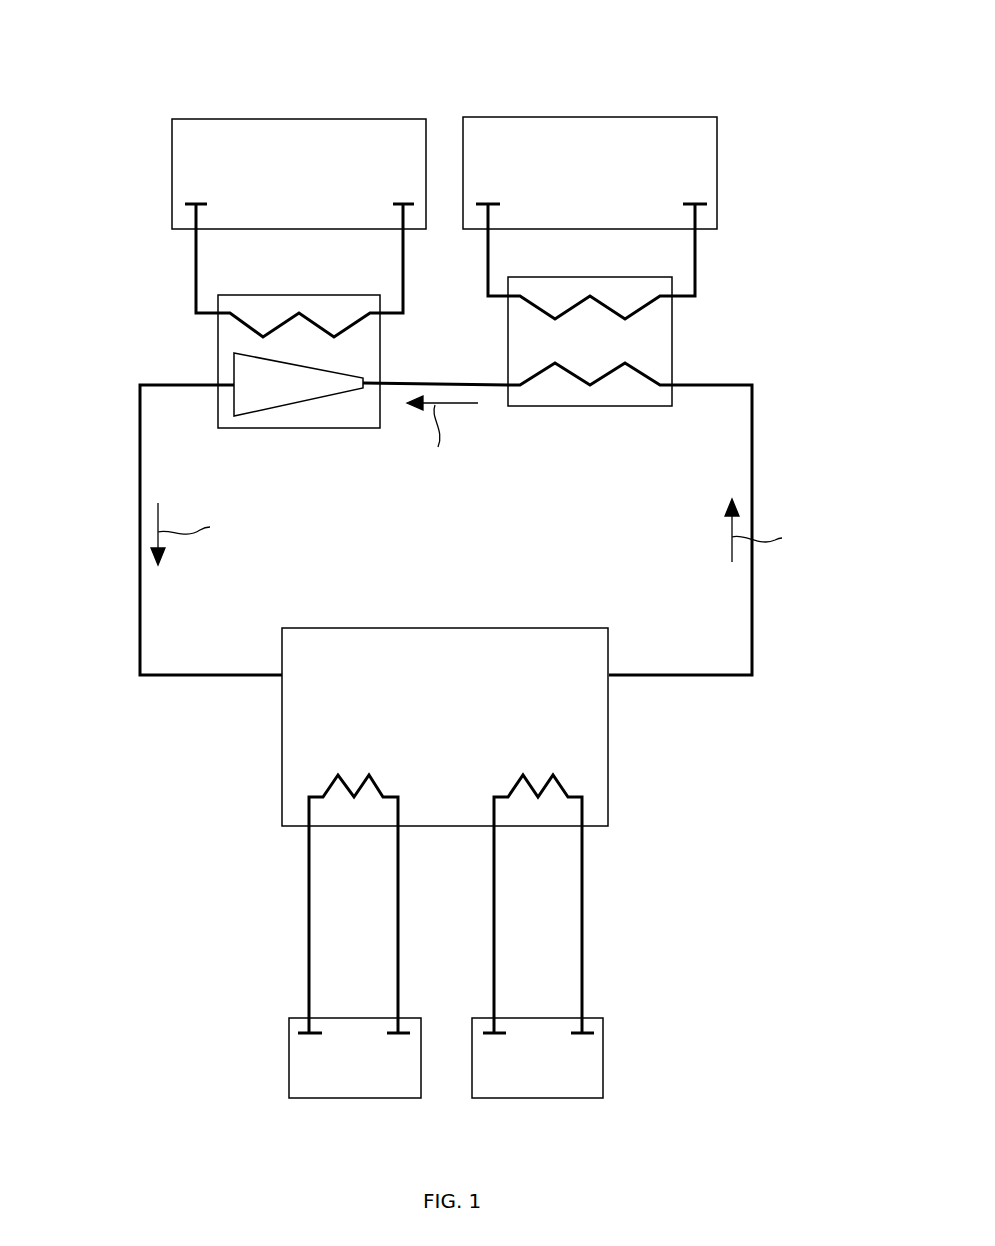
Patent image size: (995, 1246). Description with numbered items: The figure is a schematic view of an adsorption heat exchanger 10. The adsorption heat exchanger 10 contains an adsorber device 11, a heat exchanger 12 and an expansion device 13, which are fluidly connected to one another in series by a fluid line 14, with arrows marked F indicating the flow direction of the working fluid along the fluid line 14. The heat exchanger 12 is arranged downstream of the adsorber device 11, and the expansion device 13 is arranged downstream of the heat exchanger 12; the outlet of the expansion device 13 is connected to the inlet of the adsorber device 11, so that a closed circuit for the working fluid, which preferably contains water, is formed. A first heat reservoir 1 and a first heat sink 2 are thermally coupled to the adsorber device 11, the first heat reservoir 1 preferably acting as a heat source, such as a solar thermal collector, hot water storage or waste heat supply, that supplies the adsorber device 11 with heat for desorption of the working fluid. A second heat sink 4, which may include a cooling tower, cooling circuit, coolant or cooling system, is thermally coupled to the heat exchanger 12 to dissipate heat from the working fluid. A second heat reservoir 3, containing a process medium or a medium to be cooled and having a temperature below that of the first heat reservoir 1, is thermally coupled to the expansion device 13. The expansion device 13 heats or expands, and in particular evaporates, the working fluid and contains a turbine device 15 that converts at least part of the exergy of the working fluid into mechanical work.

The first heat reservoir 1 is at (545, 1074).
The first heat sink 2 is at (362, 1074).
The second heat reservoir 3 is at (305, 189).
The second heat sink 4 is at (597, 189).
The adsorption heat exchanger 10 is at (116, 78).
The adsorber device 11 is at (609, 737).
The heat exchanger 12 is at (672, 333).
The expansion device 13 is at (218, 355).
The fluid line 14 is at (139, 468).
The turbine device 15 is at (283, 393).